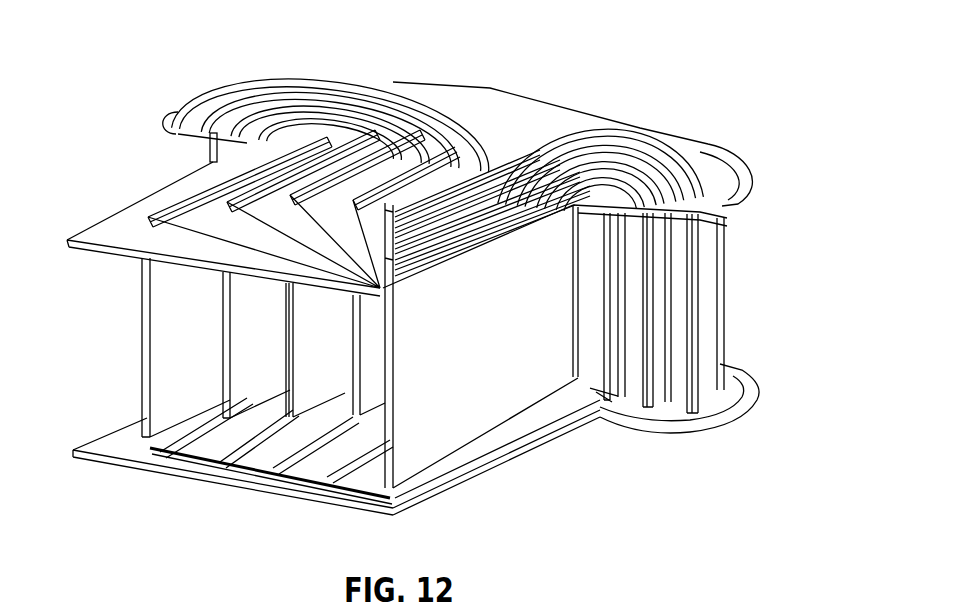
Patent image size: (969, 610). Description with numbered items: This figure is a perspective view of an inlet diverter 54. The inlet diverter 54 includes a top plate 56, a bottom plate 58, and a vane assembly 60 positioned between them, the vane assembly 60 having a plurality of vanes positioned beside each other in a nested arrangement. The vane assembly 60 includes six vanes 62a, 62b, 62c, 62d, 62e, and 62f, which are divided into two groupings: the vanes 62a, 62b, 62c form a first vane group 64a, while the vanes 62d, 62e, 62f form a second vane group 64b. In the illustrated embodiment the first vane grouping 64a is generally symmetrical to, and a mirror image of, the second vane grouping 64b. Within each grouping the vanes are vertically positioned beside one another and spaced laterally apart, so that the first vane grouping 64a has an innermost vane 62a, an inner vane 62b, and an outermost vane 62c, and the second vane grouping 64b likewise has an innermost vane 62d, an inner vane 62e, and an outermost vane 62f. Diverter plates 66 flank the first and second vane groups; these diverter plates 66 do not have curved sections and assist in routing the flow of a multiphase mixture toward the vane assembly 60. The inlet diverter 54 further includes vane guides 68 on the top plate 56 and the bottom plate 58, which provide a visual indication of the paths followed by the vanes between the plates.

The inlet diverter 54 is at (679, 52).
The top plate 56 is at (498, 104).
The bottom plate 58 is at (470, 470).
The vane assembly 60 is at (686, 280).
The innermost vane 62a is at (615, 263).
The inner vane 62b is at (657, 340).
The outermost vane 62c is at (708, 357).
The innermost vane 62d is at (307, 387).
The inner vane 62e is at (352, 376).
The outermost vane 62f is at (243, 374).
The first vane group 64a is at (605, 397).
The second vane group 64b is at (212, 155).
The diverter plates 66 is at (140, 310).
The vane guides 68 is at (702, 150).